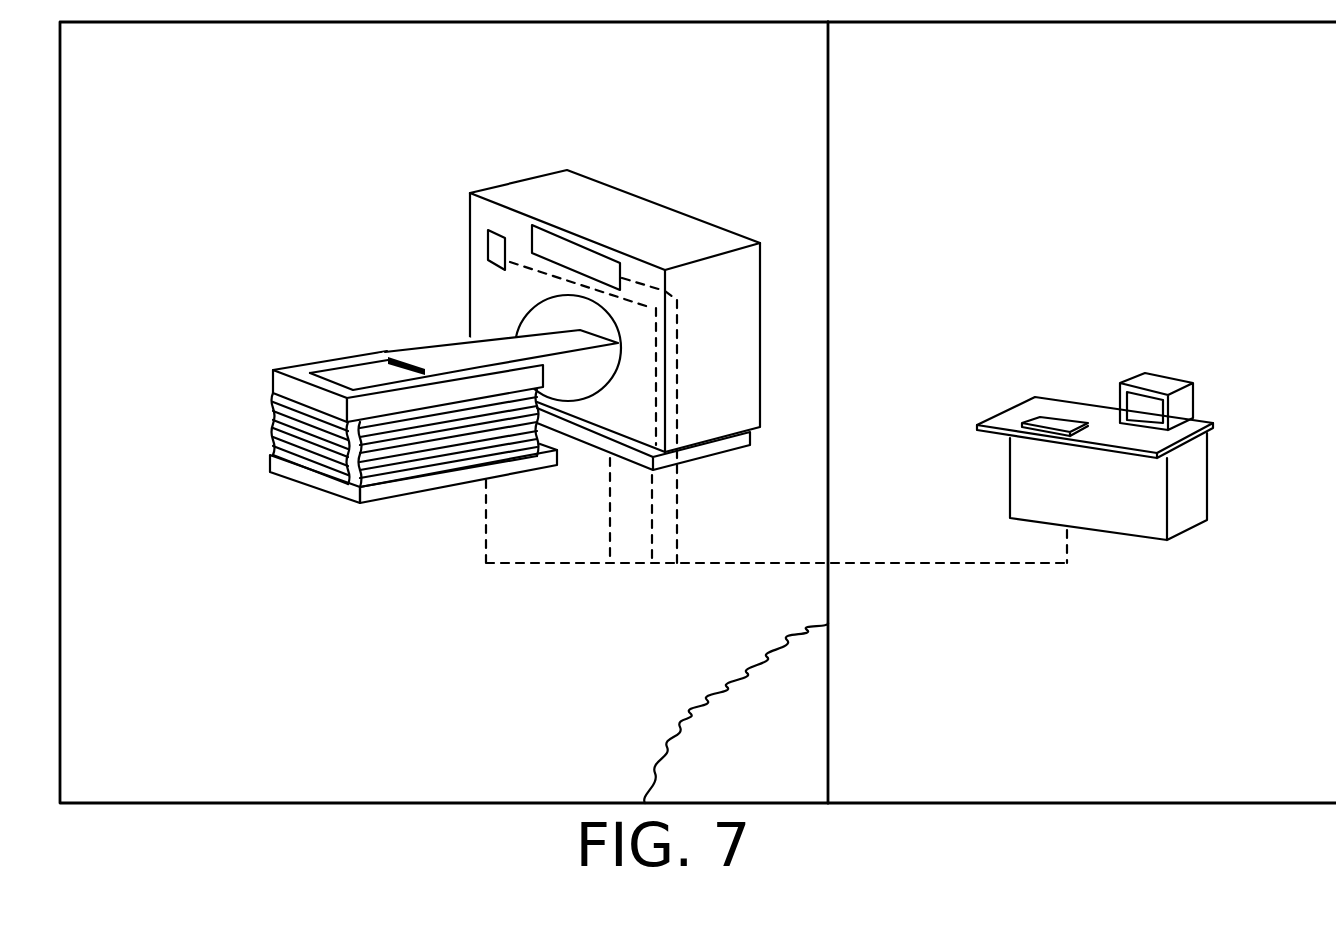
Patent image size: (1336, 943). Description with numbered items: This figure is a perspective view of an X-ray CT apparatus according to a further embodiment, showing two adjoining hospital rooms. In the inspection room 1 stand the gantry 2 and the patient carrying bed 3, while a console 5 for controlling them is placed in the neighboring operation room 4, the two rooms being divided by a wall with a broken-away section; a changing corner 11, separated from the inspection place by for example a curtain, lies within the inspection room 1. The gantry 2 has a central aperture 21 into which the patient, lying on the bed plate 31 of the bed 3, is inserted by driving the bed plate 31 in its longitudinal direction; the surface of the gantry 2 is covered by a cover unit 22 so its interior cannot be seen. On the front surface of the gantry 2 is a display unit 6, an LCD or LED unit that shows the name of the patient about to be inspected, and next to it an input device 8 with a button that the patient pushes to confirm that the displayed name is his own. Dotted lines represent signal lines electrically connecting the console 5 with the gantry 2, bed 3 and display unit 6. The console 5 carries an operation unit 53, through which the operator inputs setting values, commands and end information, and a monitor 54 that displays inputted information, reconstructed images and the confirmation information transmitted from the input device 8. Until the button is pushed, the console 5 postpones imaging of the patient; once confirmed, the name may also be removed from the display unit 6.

The inspection room 1 is at (328, 803).
The gantry 2 is at (659, 205).
The patient carrying bed 3 is at (305, 481).
The operation room 4 is at (1148, 808).
The console 5 is at (1206, 486).
The display unit 6 is at (560, 237).
The input device 8 is at (486, 246).
The changing corner 11 is at (720, 727).
The central aperture 21 is at (593, 372).
The cover unit 22 is at (722, 412).
The bed plate 31 is at (427, 362).
The operation unit 53 is at (1045, 418).
The monitor 54 is at (1177, 380).